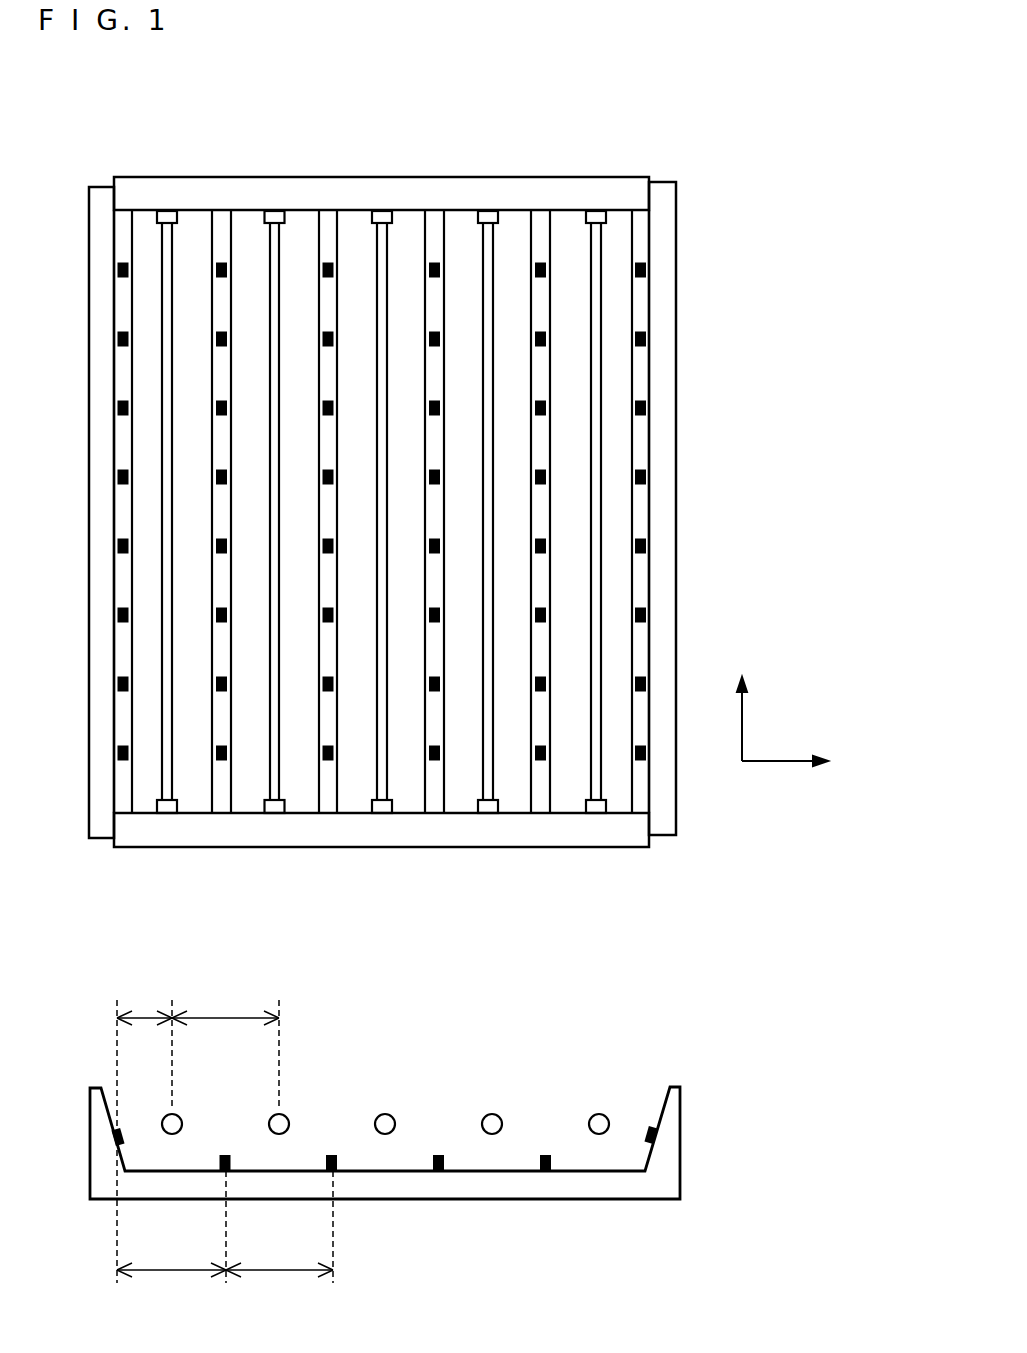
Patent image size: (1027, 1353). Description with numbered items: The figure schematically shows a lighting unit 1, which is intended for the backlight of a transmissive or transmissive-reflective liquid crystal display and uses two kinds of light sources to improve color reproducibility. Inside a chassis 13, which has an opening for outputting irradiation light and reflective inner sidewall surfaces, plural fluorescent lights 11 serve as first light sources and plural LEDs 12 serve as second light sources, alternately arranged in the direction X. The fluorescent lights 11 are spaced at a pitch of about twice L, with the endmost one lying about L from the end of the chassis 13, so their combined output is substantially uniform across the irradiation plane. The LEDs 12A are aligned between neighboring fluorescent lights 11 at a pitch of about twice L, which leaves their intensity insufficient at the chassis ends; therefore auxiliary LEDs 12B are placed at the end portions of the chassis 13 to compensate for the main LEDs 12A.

The lighting unit 1 is at (682, 116).
The fluorescent light 11 is at (387, 268).
The LED 12 is at (273, 122).
The LED 12A is at (228, 265).
The LED 12B is at (129, 265).
The chassis 13 is at (676, 386).